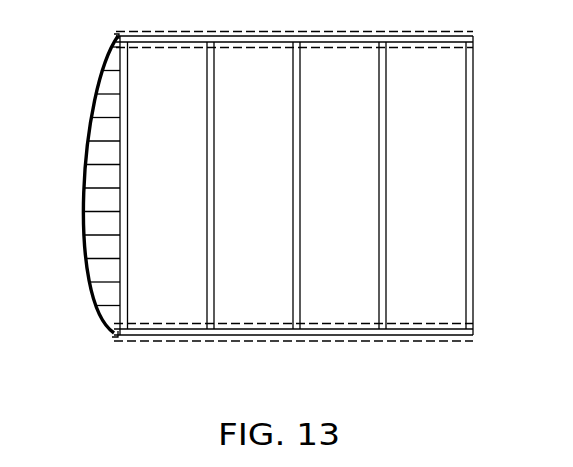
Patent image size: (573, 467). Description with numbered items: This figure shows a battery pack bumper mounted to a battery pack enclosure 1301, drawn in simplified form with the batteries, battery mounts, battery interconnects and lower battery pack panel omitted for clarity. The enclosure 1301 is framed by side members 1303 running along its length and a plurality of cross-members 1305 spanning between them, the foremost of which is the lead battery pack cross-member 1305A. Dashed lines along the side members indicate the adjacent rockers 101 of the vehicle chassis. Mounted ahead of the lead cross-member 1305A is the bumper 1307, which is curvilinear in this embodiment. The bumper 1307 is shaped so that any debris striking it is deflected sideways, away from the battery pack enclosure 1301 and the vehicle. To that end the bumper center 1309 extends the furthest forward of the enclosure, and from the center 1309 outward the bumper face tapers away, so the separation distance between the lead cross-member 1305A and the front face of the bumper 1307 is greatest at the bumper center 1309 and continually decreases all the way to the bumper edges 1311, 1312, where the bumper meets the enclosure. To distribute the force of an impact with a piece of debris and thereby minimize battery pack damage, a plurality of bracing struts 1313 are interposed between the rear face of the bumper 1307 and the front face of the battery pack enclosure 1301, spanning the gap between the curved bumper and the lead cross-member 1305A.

The rockers 101 is at (228, 32).
The battery pack enclosure 1301 is at (510, 117).
The side members 1303 is at (359, 33).
The cross-members 1305 is at (233, 212).
The lead battery pack cross-member 1305A is at (157, 122).
The bumper 1307 is at (87, 103).
The bumper center 1309 is at (68, 186).
The bumper edge 1311 is at (115, 32).
The bumper edge 1312 is at (117, 338).
The struts 1313 is at (112, 212).